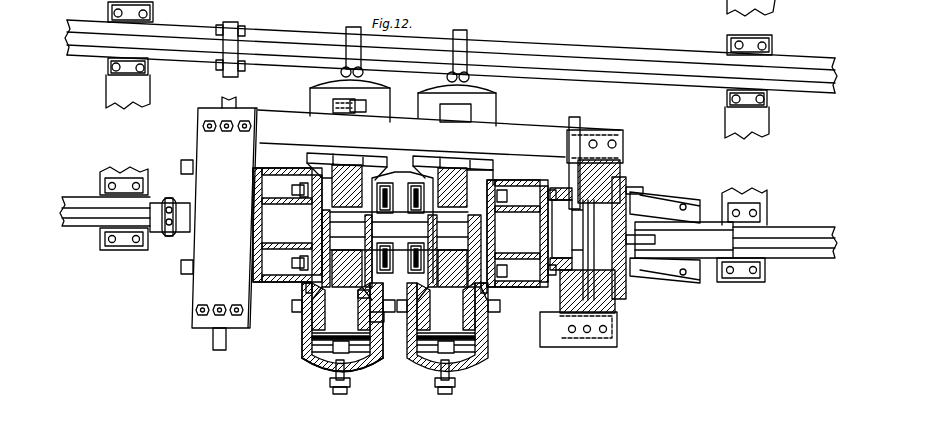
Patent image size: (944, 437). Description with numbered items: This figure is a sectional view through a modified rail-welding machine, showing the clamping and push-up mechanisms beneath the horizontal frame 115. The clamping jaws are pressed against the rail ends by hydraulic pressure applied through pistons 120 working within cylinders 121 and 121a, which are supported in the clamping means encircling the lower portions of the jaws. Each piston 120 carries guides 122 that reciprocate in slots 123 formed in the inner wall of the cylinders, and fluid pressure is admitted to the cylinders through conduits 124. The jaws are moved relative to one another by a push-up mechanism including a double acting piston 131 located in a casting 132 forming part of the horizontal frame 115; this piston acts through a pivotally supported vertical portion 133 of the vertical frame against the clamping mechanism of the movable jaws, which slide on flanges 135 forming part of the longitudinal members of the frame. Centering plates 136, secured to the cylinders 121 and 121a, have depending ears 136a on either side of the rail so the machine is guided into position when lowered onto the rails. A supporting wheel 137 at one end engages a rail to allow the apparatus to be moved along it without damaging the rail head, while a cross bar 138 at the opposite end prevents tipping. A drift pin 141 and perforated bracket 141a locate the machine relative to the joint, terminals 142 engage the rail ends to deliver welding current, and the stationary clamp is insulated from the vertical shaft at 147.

The horizontal frame 115 is at (543, 130).
The pistons 120 is at (302, 335).
The cylinder 121 is at (373, 375).
The cylinder 121a is at (480, 375).
The guides 122 is at (372, 297).
The slots 123 is at (384, 318).
The conduits 124 is at (338, 394).
The double acting piston 131 is at (592, 236).
The casting 132 is at (612, 170).
The pivotally supported vertical portion 133 is at (525, 200).
The flanges 135 is at (476, 113).
The centering plates 136 is at (481, 288).
The ears 136a is at (306, 287).
The supporting wheel 137 is at (712, 258).
The cross bar 138 is at (236, 102).
The drift pin 141 is at (170, 203).
The perforated bracket 141a is at (170, 236).
The terminals 142 is at (412, 188).
The insulation 147 is at (318, 218).